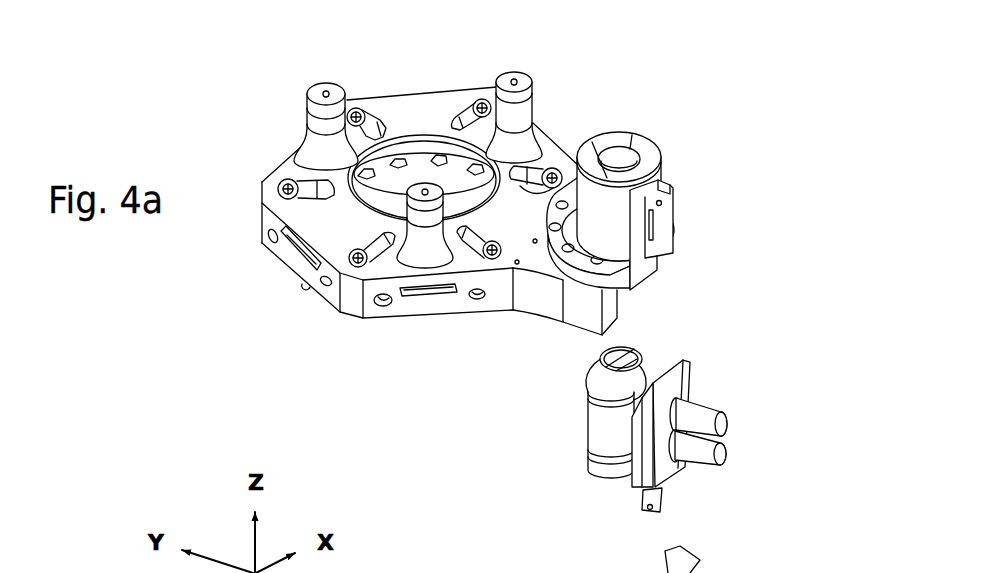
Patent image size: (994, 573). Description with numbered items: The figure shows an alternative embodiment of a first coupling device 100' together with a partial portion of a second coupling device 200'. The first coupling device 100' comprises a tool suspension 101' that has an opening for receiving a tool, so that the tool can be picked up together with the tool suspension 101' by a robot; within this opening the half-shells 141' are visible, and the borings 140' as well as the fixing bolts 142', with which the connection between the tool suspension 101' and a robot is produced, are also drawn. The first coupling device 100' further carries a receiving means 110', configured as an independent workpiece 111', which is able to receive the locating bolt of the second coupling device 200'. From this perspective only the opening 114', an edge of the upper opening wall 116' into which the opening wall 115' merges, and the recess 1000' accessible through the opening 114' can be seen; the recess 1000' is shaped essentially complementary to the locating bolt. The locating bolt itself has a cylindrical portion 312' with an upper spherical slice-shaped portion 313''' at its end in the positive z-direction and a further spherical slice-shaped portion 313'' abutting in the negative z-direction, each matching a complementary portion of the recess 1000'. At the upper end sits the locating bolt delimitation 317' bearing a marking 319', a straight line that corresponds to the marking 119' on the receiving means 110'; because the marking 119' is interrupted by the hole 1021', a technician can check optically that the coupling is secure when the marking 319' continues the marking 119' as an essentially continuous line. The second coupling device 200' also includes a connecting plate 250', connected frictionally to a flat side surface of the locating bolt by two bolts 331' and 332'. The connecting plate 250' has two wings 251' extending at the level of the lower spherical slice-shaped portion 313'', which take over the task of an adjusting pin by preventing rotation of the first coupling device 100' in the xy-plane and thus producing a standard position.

The first coupling device 100' is at (387, 214).
The tool suspension 101' is at (412, 301).
The receiving means 110' is at (642, 159).
The independent workpiece 111' is at (660, 137).
The hole of the receiving means 1021' is at (590, 135).
The marking of the receiving means 119' is at (630, 129).
The upper opening wall 116' is at (706, 163).
The opening wall 115' is at (704, 205).
The opening 114' is at (694, 211).
The recess 1000' is at (642, 256).
The borings 140' is at (369, 87).
The half-shells 141' is at (424, 127).
The fixing bolts 142' is at (279, 126).
The second coupling device 200' is at (669, 445).
The locating bolt delimitation 317' is at (588, 364).
The marking 319' is at (649, 344).
The spherical slice-shaped portion 313''' is at (559, 387).
The cylindrical portion 312' is at (572, 435).
The spherical slice-shaped portion 313'' is at (567, 473).
The connecting plate 250' is at (703, 453).
The wings 251' is at (621, 511).
The bolt 331' is at (724, 406).
The bolt 332' is at (729, 465).